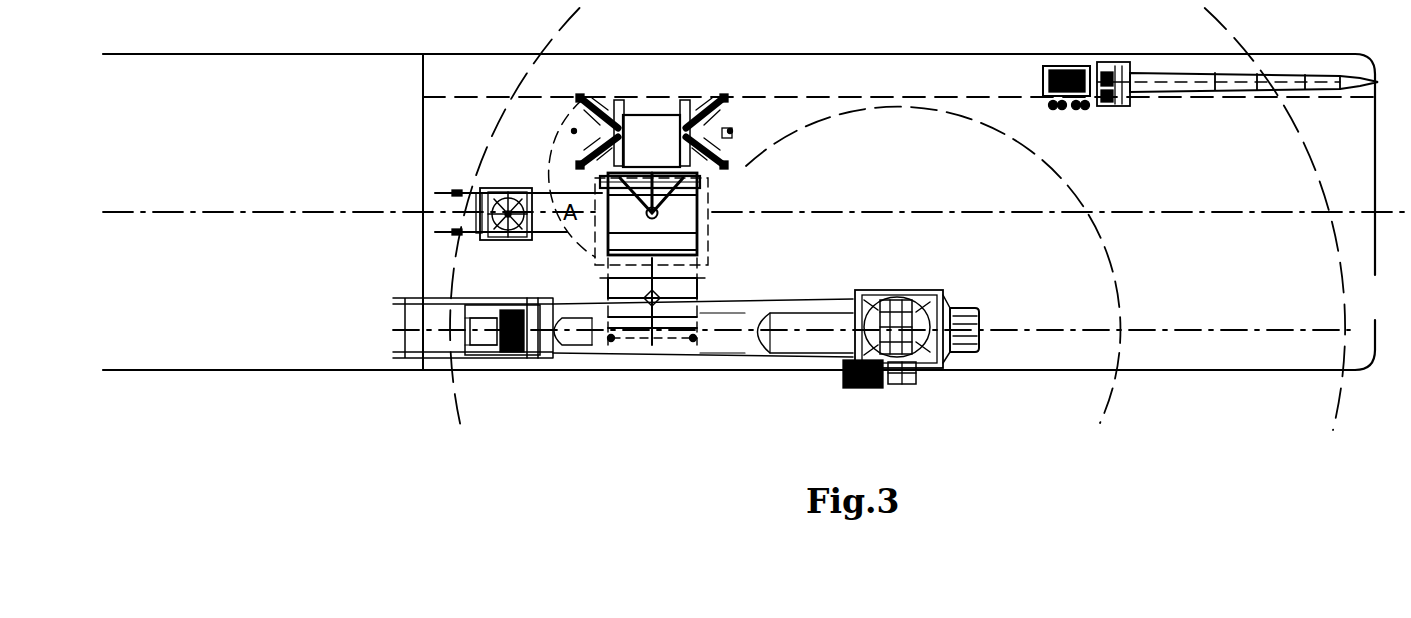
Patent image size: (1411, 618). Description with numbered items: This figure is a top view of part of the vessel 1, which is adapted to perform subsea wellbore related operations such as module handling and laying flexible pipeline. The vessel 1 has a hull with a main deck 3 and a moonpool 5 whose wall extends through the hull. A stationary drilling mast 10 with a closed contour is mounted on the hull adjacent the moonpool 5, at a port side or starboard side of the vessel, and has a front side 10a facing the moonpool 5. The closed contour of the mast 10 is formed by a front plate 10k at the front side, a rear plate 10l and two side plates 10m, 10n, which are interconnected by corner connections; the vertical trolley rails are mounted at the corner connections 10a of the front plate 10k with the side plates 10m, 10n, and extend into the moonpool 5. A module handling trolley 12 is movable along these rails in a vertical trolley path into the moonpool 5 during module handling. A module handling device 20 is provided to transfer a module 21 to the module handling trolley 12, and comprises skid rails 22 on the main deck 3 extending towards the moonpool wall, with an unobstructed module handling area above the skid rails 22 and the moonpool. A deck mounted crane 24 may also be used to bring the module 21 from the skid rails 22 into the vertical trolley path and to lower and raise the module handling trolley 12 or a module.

The vessel 1 is at (757, 212).
The main deck 3 is at (1210, 125).
The moonpool 5 is at (680, 207).
The stationary drilling mast 10 is at (651, 141).
The front side of the drilling mast 10a is at (670, 162).
The front plate 10k is at (815, 141).
The rear plate 10l is at (652, 109).
The side plate 10m is at (634, 128).
The side plate 10n is at (677, 130).
The module handling trolley 12 is at (716, 183).
The module handling device 20 is at (478, 193).
The module 21 is at (507, 188).
The skid rails 22 is at (587, 253).
The crane 24 is at (930, 280).